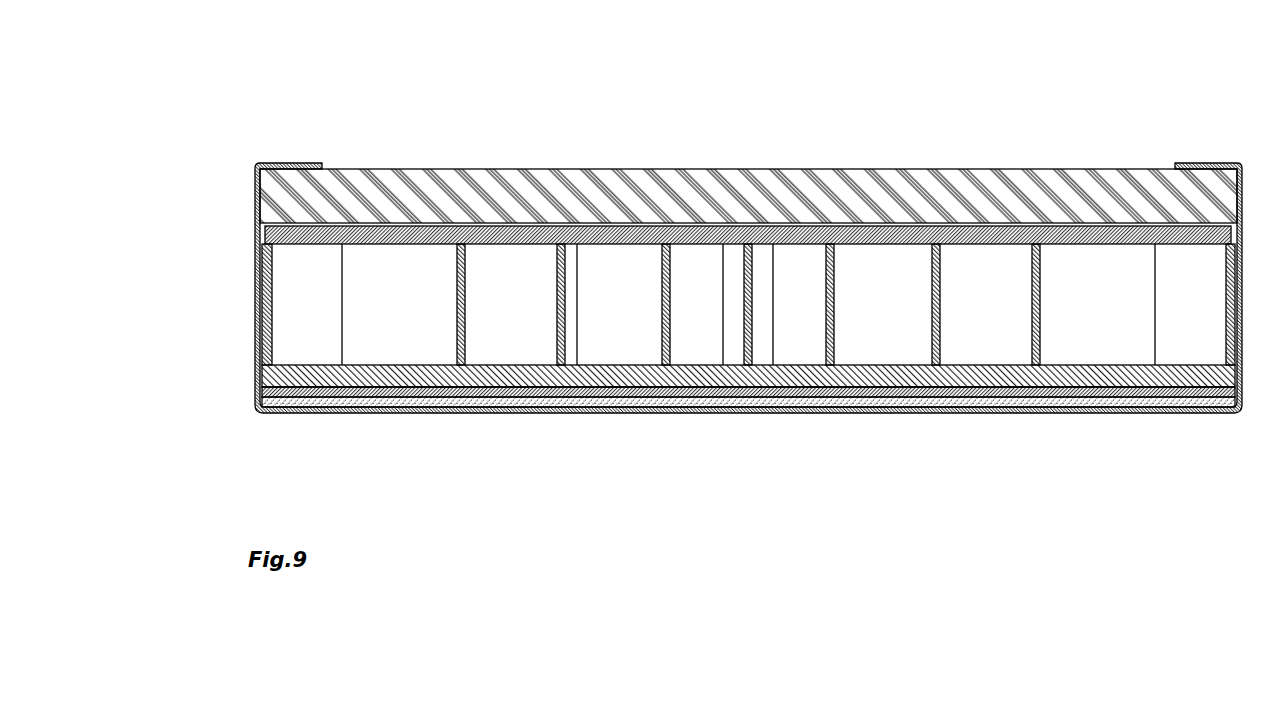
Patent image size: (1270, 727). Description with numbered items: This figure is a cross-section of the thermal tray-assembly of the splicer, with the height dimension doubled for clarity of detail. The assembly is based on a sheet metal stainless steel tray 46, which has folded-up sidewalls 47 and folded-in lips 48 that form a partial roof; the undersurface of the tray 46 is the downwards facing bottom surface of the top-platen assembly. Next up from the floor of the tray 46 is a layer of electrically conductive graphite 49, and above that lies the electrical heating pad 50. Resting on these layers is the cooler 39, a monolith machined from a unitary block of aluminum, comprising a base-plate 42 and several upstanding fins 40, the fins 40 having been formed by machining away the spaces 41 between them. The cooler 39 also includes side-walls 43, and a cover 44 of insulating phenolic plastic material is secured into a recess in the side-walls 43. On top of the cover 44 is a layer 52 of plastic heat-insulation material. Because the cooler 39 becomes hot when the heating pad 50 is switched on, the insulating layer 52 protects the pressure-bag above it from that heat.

The cooler 39 is at (622, 292).
The fins 40 is at (932, 334).
The spaces 41 is at (1100, 342).
The base-plate 42 is at (749, 388).
The side-walls 43 is at (262, 283).
The cover 44 is at (697, 238).
The tray 46 is at (392, 404).
The sidewalls 47 is at (262, 378).
The lips 48 is at (1205, 165).
The graphite layer 49 is at (505, 390).
The electrical heating pad 50 is at (582, 388).
The heat-insulation layer 52 is at (807, 198).